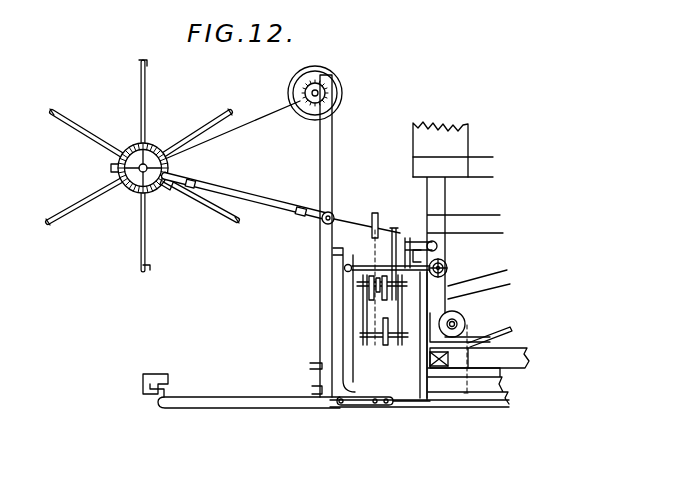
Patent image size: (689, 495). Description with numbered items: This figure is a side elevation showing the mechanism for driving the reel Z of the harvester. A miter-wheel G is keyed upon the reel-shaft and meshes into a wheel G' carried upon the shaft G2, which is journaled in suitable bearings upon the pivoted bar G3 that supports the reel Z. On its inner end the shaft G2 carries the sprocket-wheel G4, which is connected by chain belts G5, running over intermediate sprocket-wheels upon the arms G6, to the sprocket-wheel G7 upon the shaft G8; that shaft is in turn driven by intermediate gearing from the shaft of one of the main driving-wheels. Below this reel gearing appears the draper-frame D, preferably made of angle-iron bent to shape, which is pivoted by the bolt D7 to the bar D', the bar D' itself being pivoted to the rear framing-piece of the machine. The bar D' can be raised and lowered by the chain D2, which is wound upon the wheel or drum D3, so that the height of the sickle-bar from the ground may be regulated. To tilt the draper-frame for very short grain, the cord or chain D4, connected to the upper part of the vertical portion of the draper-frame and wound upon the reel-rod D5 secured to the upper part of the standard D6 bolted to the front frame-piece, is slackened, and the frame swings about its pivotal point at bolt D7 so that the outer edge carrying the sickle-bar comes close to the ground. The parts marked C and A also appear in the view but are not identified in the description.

The reel Z is at (70, 131).
The miter-wheel G is at (134, 182).
The wheel G' is at (166, 201).
The shaft G2 is at (260, 208).
The pivoted bar G3 is at (290, 214).
The sprocket-wheel G4 is at (373, 212).
The chain belts G5 is at (390, 246).
The arms G6 is at (363, 262).
The sprocket-wheel G7 is at (386, 346).
The shaft G8 is at (401, 346).
The draper-frame D is at (241, 405).
The bar D' is at (410, 418).
The chain D2 is at (468, 360).
The wheel or drum D3 is at (467, 314).
The cord or chain D4 is at (345, 270).
The reel-rod D5 is at (447, 268).
The standard D6 is at (448, 284).
The bolt D7 is at (340, 406).
The feed plate C is at (517, 333).
The frame bed A is at (530, 350).